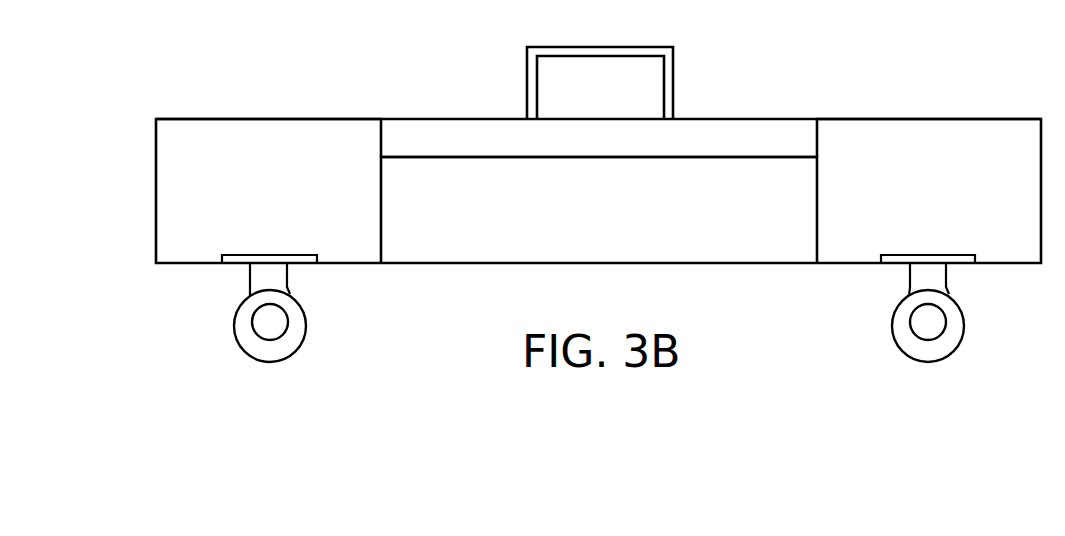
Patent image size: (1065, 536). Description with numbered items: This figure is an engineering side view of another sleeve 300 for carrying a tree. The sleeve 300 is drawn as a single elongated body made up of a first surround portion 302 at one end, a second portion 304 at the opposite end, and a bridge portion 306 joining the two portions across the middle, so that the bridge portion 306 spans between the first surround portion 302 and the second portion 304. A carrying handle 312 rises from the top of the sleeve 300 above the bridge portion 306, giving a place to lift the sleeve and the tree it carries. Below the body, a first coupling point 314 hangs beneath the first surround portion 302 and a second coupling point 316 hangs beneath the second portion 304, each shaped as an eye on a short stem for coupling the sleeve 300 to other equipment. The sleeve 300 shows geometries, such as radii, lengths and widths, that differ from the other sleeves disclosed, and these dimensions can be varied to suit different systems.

The sleeve 300 is at (614, 270).
The first surround portion 302 is at (265, 162).
The second portion 304 is at (1030, 153).
The bridge portion 306 is at (618, 152).
The carrying handle 312 is at (527, 85).
The first coupling point 314 is at (268, 270).
The second coupling point 316 is at (928, 265).